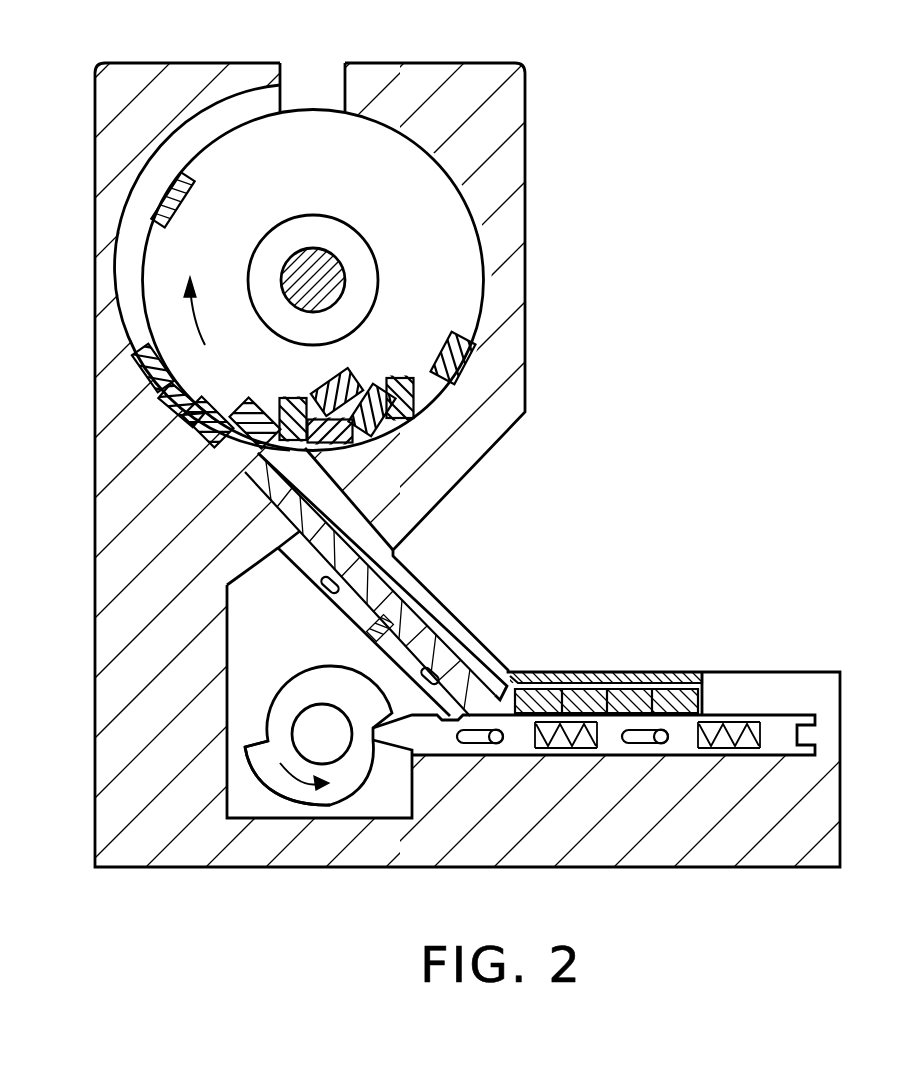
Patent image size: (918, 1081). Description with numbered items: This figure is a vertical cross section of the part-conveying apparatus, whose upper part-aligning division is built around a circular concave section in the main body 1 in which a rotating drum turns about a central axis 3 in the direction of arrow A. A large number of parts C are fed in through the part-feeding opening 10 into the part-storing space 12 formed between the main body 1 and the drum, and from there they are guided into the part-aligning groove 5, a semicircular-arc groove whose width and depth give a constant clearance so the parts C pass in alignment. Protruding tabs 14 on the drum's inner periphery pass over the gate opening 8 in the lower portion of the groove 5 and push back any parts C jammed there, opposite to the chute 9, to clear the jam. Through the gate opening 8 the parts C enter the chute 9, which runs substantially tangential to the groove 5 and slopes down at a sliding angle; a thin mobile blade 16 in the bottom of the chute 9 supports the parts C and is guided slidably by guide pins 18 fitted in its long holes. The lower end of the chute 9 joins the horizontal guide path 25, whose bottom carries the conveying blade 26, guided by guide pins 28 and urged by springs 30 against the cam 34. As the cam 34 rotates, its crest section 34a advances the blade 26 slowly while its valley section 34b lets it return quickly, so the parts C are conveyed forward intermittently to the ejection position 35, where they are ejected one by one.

The main body 1 is at (530, 258).
The axis 3 is at (340, 270).
The part-aligning groove 5 is at (116, 243).
The gate opening 8 is at (244, 448).
The chute 9 is at (405, 612).
The part-feeding opening 10 is at (318, 80).
The part-storing space 12 is at (297, 187).
The protruding tabs 14 is at (186, 194).
The mobile blade 16 is at (352, 615).
The guide pins 18 is at (320, 584).
The horizontal guide path 25 is at (600, 695).
The conveying blade 26 is at (640, 745).
The guide pins 28 is at (490, 744).
The spring 30 is at (568, 750).
The cam 34 is at (325, 804).
The crest section 34a is at (266, 772).
The valley section 34b is at (256, 745).
The ejection position 35 is at (783, 690).
The rotation direction arrow A is at (205, 311).
The parts C is at (292, 408).